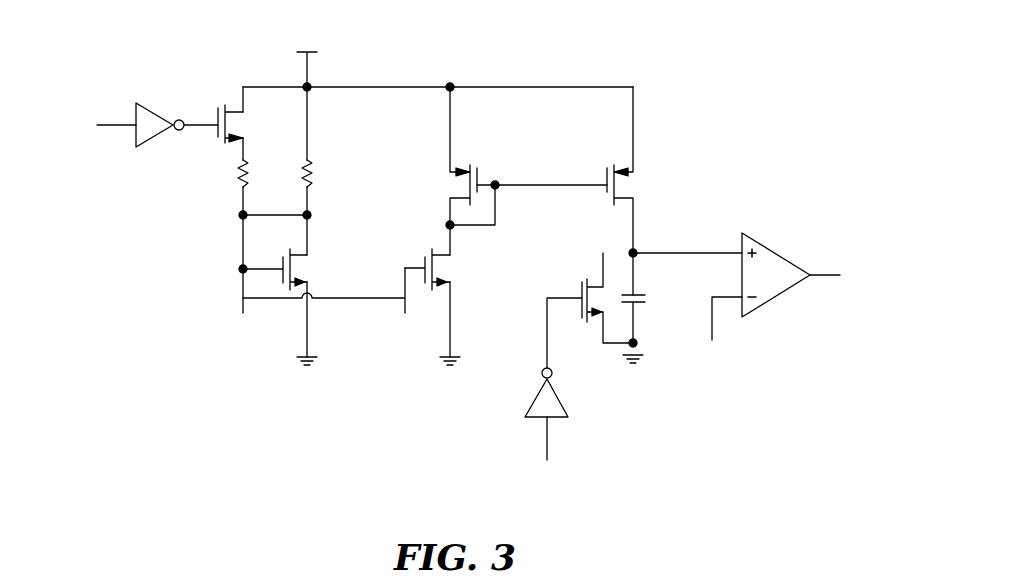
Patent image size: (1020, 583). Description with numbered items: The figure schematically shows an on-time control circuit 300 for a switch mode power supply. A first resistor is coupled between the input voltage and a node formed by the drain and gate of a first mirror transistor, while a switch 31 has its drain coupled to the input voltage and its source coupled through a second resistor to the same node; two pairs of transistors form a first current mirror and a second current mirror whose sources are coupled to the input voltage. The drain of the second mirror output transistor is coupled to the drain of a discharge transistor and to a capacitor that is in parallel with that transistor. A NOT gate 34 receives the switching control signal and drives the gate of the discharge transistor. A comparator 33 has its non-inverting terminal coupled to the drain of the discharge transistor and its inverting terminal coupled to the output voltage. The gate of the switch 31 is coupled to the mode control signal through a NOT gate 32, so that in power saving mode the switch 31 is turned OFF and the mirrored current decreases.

The on-time control circuit 300 is at (744, 50).
The switch 31 is at (218, 113).
The NOT gate 32 is at (151, 104).
The comparator 33 is at (768, 247).
The NOT gate 34 is at (557, 393).